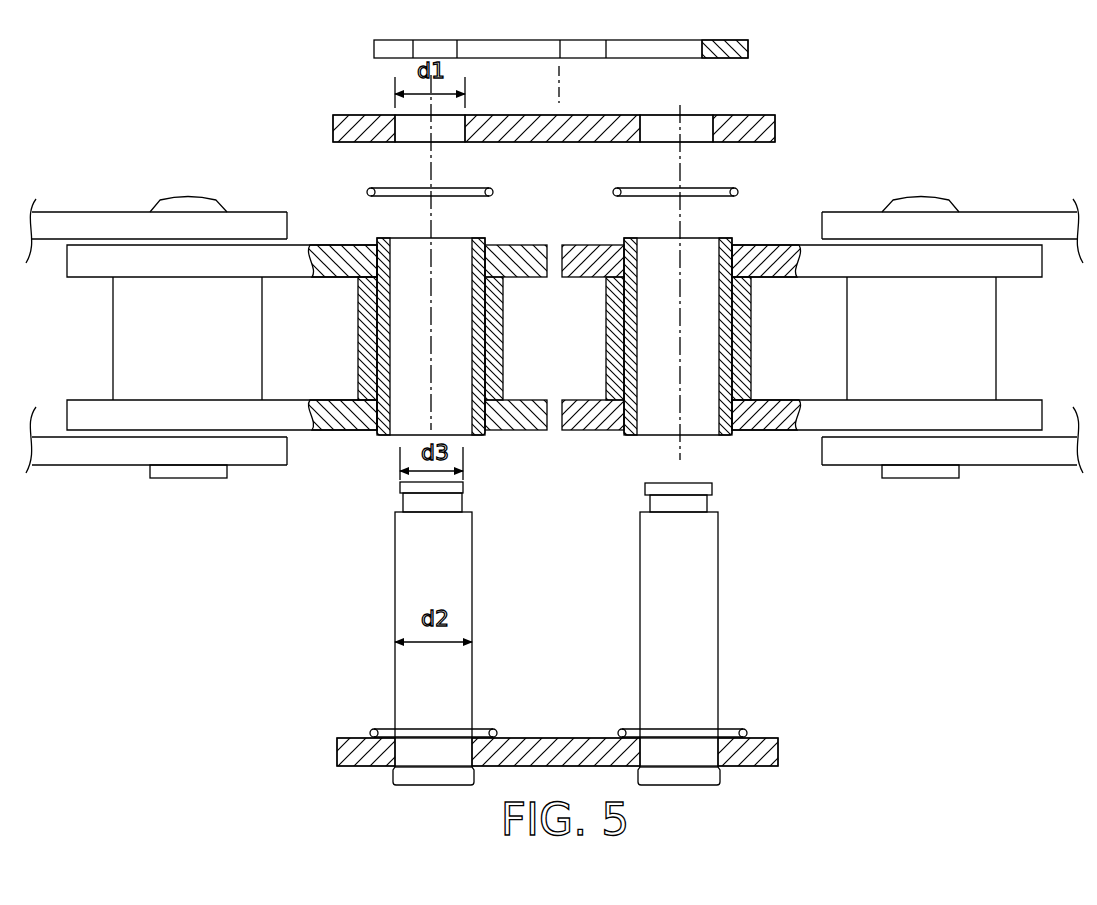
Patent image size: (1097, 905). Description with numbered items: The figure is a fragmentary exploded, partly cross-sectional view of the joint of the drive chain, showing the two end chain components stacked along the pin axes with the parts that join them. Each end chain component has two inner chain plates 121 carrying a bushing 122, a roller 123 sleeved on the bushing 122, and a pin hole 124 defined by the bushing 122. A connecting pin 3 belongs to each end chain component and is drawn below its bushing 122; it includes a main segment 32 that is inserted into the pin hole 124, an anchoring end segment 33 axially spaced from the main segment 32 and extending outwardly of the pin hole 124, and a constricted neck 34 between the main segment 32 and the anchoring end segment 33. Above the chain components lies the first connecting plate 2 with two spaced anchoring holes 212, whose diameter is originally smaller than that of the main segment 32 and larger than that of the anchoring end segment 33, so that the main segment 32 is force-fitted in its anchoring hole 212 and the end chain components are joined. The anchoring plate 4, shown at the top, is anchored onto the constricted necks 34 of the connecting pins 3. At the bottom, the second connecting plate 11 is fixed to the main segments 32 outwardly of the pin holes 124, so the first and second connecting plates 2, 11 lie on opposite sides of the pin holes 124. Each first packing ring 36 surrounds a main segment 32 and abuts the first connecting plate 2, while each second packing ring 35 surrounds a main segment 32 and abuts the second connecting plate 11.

The anchoring plate 4 is at (748, 52).
The first connecting plate 2 is at (775, 117).
The anchoring holes 212 is at (445, 137).
The first packing rings 36 is at (493, 192).
The inner chain plates 121 is at (348, 253).
The roller 123 is at (363, 317).
The bushing 122 is at (387, 433).
The pin hole 124 is at (407, 420).
The connecting pin 3 is at (546, 633).
The anchoring end segment 33 is at (463, 487).
The constricted neck 34 is at (425, 508).
The main segment 32 is at (413, 594).
The second packing rings 35 is at (383, 730).
The second connecting plate 11 is at (565, 758).